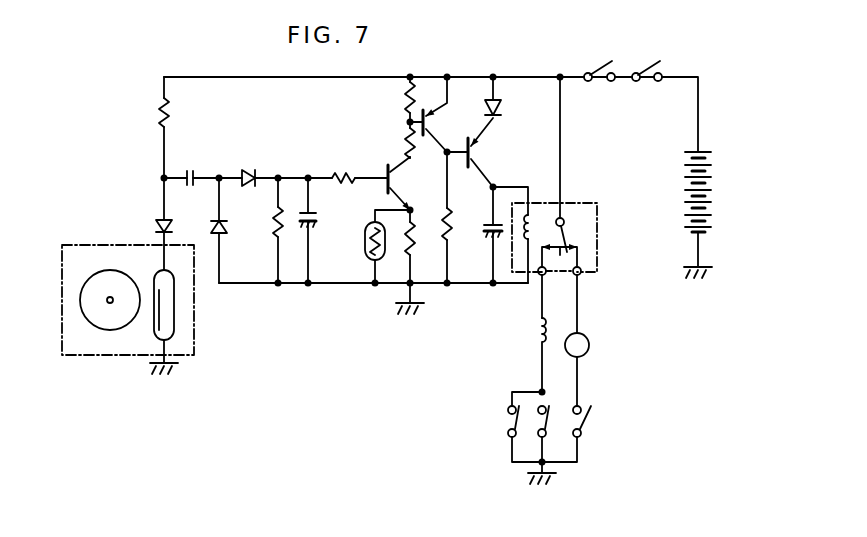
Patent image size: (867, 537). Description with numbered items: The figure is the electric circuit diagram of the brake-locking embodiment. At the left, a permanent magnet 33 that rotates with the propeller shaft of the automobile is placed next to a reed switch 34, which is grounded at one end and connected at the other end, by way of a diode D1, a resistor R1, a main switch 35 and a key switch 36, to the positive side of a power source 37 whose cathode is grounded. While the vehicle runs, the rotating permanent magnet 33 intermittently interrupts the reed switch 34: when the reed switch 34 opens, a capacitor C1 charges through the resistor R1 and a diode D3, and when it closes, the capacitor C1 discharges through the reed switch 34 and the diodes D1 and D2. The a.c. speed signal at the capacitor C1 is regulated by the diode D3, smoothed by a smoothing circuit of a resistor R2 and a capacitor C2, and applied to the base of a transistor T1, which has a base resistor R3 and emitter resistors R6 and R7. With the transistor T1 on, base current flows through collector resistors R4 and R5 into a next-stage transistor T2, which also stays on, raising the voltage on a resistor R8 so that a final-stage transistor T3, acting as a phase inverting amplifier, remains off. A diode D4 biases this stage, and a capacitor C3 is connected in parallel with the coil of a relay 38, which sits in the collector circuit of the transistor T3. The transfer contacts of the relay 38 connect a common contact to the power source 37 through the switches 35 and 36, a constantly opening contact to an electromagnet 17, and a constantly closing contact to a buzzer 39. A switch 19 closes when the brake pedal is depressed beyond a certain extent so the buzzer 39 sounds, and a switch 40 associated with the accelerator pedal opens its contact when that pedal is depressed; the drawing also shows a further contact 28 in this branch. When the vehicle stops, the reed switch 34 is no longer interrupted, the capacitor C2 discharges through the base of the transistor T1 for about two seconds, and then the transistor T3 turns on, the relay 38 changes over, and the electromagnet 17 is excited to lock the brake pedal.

The resistor R1 is at (159, 110).
The capacitor C1 is at (190, 170).
The diode D1 is at (157, 232).
The diode D2 is at (212, 232).
The diode D3 is at (248, 170).
The resistor R2 is at (273, 231).
The capacitor C2 is at (317, 222).
The base resistor R3 is at (348, 173).
The transistor T1 is at (396, 179).
The emitter resistor R7 is at (365, 247).
The emitter resistor R6 is at (413, 250).
The collector resistor R4 is at (403, 101).
The collector resistor R5 is at (403, 139).
The transistor T2 is at (434, 118).
The diode D4 is at (502, 113).
The transistor T3 is at (486, 157).
The resistor R8 is at (451, 248).
The capacitor C3 is at (481, 230).
The relay 38 is at (584, 201).
The main switch 35 is at (599, 66).
The key switch 36 is at (649, 66).
The power source 37 is at (685, 158).
The electromagnet 17 is at (538, 332).
The buzzer 39 is at (590, 339).
The switch 28 is at (506, 419).
The switch 40 is at (536, 428).
The switch 19 is at (595, 421).
The permanent magnet 33 is at (110, 330).
The reed switch 34 is at (176, 308).